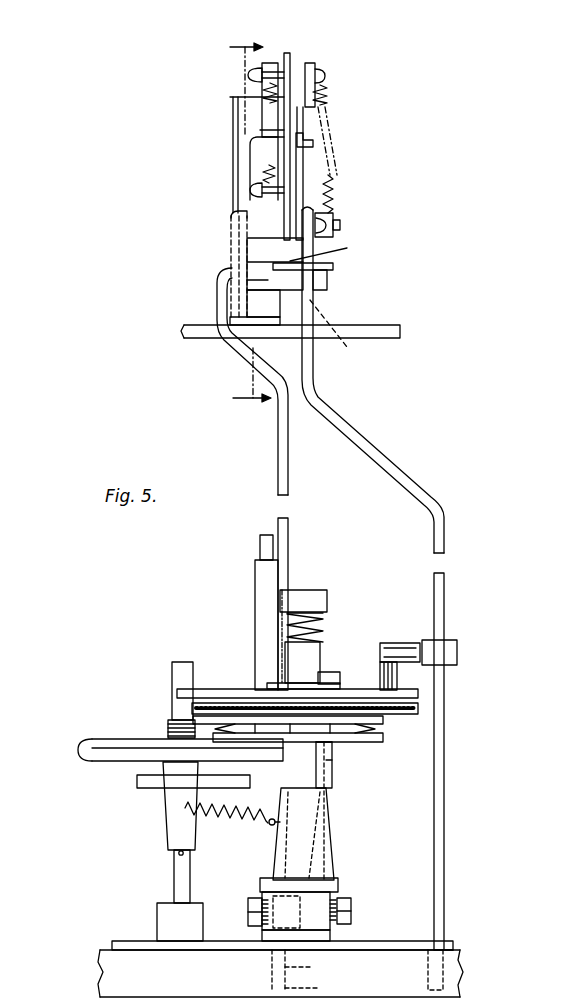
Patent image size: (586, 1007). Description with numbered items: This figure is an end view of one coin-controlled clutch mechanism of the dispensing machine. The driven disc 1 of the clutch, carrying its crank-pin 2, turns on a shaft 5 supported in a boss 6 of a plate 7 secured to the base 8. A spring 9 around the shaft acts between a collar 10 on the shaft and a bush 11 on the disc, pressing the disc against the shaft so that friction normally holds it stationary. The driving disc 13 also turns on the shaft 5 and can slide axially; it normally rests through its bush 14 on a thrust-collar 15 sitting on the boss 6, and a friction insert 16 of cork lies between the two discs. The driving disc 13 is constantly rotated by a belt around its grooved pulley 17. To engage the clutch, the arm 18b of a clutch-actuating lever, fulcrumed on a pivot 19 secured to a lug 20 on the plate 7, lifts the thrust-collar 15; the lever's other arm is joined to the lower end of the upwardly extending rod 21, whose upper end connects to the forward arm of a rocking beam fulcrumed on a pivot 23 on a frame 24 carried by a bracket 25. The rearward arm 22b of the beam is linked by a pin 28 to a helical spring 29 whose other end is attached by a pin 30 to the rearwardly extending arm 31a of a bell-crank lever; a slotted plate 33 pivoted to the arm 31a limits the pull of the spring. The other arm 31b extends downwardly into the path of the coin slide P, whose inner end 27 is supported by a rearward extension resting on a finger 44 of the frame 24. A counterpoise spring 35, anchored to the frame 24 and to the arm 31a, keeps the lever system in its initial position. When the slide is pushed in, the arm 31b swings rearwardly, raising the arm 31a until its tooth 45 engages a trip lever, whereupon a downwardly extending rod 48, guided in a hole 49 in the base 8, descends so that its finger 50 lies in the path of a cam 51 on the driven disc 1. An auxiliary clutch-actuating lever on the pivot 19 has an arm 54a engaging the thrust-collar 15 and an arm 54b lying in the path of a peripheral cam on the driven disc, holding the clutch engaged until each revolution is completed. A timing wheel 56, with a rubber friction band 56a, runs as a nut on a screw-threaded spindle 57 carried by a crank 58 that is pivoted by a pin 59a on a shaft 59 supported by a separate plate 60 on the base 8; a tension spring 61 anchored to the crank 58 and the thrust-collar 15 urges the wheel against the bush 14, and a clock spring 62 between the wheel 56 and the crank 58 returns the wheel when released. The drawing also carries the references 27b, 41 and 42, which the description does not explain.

The driven disc 1 is at (237, 690).
The crank-pin 2 is at (255, 580).
The shaft 5 is at (320, 617).
The boss 6 is at (318, 936).
The plate 7 is at (418, 944).
The base 8 is at (280, 973).
The spring 9 is at (290, 623).
The collar 10 is at (320, 598).
The bush 11 is at (323, 628).
The driving disc 13 is at (382, 724).
The bush 14 is at (318, 766).
The thrust-collar 15 is at (318, 879).
The friction insert 16 is at (392, 708).
The grooved pulley 17 is at (332, 746).
The arm of clutch-actuating lever 18b is at (263, 902).
The pivot 19 is at (248, 912).
The lug 20 is at (264, 936).
The rod 21 is at (282, 520).
The arm of rocking beam 22b is at (290, 203).
The pivot 23 is at (340, 228).
The frame 24 is at (237, 148).
The bracket 25 is at (200, 327).
The inner end of coin slide 27 is at (290, 272).
The flange 27b is at (334, 267).
The pin 28 is at (252, 190).
The helical spring 29 is at (260, 98).
The pin 30 is at (248, 75).
The rearwardly extending arm of bell-crank lever 31a is at (318, 96).
The downwardly extending arm of bell-crank lever 31b is at (346, 334).
The plate 33 is at (304, 165).
The counterpoise spring 35 is at (334, 154).
The bore 41 is at (303, 971).
The bore 42 is at (318, 988).
The finger 44 is at (268, 282).
The tooth 45 is at (306, 143).
The rod 48 is at (446, 540).
The hole 49 is at (458, 962).
The finger 50 is at (401, 642).
The cam 51 is at (398, 677).
The arm of auxiliary clutch-actuating lever 54a is at (338, 906).
The arm of auxiliary clutch-actuating lever 54b is at (331, 800).
The timing wheel 56 is at (140, 740).
The friction band 56a is at (80, 748).
The screw-threaded spindle 57 is at (176, 672).
The crank 58 is at (168, 830).
The shaft 59 is at (174, 890).
The pin 59a is at (176, 858).
The plate 60 is at (125, 940).
The tension spring 61 is at (226, 823).
The clock spring 62 is at (137, 781).
The coin slide P is at (328, 248).